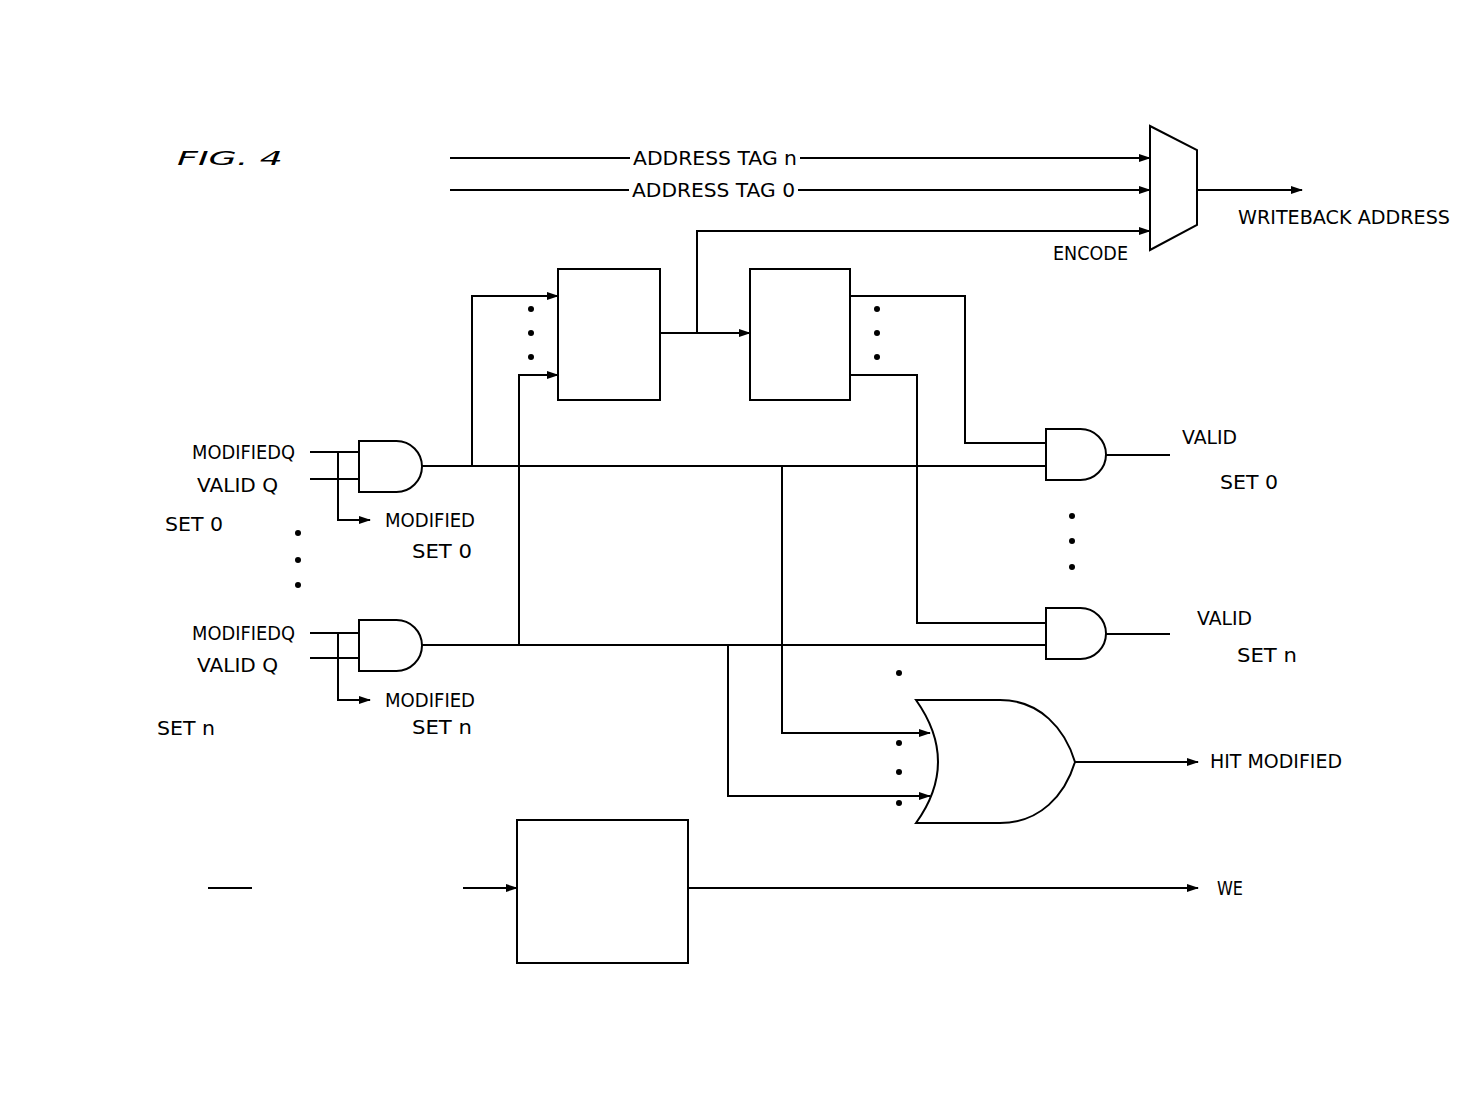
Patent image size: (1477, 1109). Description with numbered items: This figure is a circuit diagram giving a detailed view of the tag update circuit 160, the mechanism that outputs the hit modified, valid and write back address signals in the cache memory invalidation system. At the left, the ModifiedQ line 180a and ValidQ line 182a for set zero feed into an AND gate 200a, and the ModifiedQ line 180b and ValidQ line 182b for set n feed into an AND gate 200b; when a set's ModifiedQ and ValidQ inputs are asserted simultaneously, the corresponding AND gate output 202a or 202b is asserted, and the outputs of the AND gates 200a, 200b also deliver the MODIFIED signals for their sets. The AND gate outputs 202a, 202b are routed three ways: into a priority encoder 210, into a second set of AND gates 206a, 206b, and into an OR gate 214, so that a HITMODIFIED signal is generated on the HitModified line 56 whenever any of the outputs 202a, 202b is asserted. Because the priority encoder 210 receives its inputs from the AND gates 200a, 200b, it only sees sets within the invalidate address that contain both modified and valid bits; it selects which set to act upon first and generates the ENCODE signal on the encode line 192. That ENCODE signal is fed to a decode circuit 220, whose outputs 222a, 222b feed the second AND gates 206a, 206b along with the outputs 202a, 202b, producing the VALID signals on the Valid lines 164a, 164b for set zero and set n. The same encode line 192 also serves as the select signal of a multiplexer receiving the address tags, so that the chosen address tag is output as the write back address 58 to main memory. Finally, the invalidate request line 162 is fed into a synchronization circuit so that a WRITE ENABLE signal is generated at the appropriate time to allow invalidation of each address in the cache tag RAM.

The tag update circuit 160 is at (353, 325).
The ModifiedQ line 180a is at (325, 452).
The ValidQ line 182a is at (322, 480).
The AND gate 200a is at (378, 441).
The AND gate output 202a is at (448, 463).
The ModifiedQ line 180b is at (328, 630).
The ValidQ line 182b is at (323, 660).
The AND gate 200b is at (383, 620).
The AND gate output 202b is at (452, 645).
The priority encoder 210 is at (623, 267).
The decode circuit 220 is at (757, 402).
The decode circuit output 222a is at (967, 390).
The decode circuit output 222b is at (962, 622).
The second AND gate 206a is at (1063, 428).
The second AND gate 206b is at (1080, 608).
The Valid line 164a is at (1123, 448).
The Valid line 164b is at (1137, 633).
The OR gate 214 is at (1062, 731).
The HitModified line 56 is at (1125, 761).
The encode line 192 is at (1044, 230).
The write back address 58 is at (1240, 190).
The invalidate request line 162 is at (228, 888).